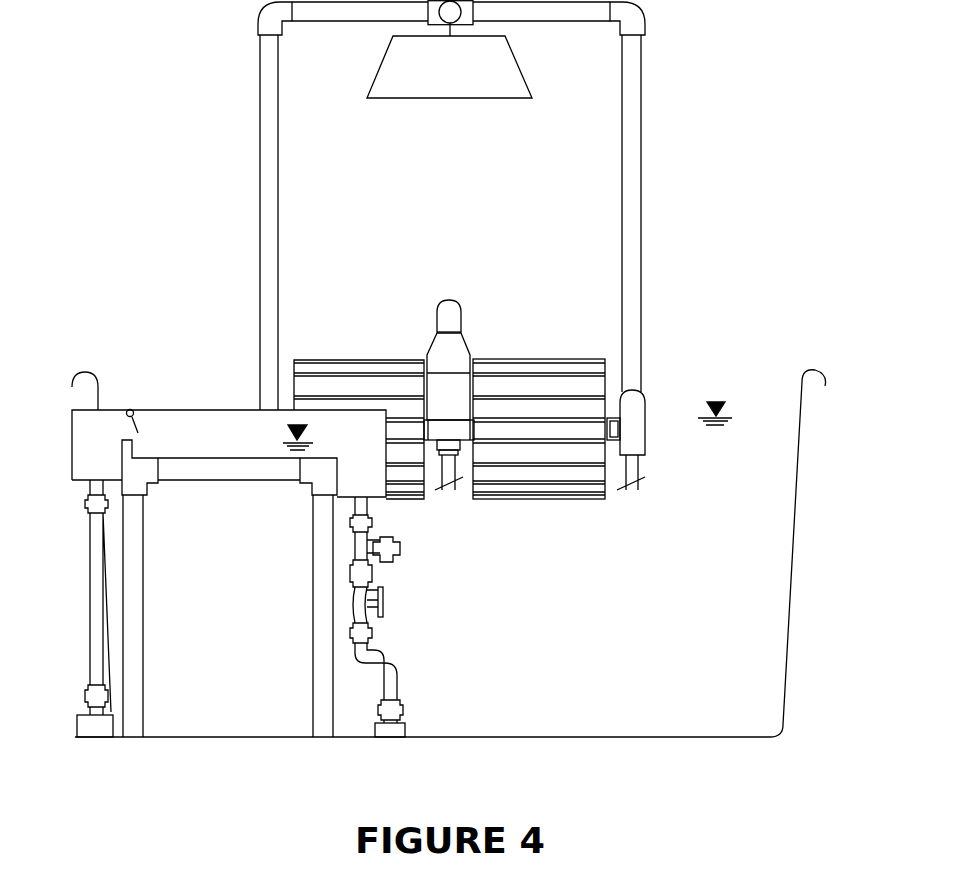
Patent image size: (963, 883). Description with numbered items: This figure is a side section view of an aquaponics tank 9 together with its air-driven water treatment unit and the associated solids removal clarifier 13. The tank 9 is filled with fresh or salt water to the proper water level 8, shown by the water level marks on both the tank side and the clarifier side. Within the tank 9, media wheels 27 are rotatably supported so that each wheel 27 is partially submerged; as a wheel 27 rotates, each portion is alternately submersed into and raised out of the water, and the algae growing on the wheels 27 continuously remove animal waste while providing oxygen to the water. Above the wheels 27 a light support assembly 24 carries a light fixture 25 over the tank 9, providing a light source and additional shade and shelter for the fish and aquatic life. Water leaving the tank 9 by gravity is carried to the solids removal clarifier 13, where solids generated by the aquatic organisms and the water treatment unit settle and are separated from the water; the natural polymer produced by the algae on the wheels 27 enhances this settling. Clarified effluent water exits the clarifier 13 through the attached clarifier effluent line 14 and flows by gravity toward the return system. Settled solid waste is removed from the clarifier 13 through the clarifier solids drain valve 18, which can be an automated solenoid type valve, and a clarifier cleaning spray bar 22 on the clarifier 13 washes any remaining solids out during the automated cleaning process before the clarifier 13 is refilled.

The water level 8 is at (308, 440).
The tank 9 is at (813, 368).
The solids removal clarifier 13 is at (230, 408).
The clarifier effluent line 14 is at (92, 577).
The clarifier solids drain valve 18 is at (385, 600).
The clarifier cleaning spray bar 22 is at (130, 409).
The light support assembly 24 is at (642, 218).
The light fixture 25 is at (447, 100).
The media wheel 27 is at (333, 360).